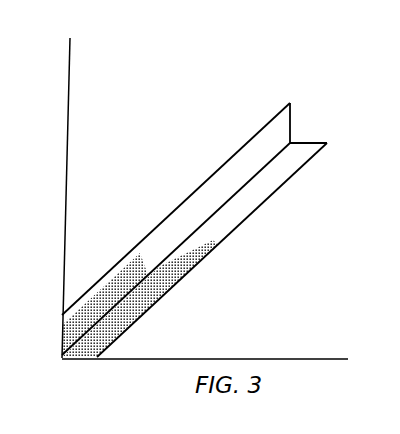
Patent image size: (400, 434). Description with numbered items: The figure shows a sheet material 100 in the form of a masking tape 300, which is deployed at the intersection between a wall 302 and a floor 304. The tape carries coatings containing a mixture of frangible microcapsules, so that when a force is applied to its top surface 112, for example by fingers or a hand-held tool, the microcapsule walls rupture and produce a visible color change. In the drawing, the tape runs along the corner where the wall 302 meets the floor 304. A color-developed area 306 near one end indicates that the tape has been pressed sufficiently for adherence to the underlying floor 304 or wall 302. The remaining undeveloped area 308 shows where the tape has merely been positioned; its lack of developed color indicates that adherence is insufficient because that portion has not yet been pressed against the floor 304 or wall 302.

The sheet material 100 is at (215, 198).
The top surface 112 is at (176, 250).
The masking tape 300 is at (291, 128).
The wall 302 is at (112, 198).
The floor 304 is at (205, 313).
The color-developed area 306 is at (100, 280).
The undeveloped area 308 is at (243, 147).